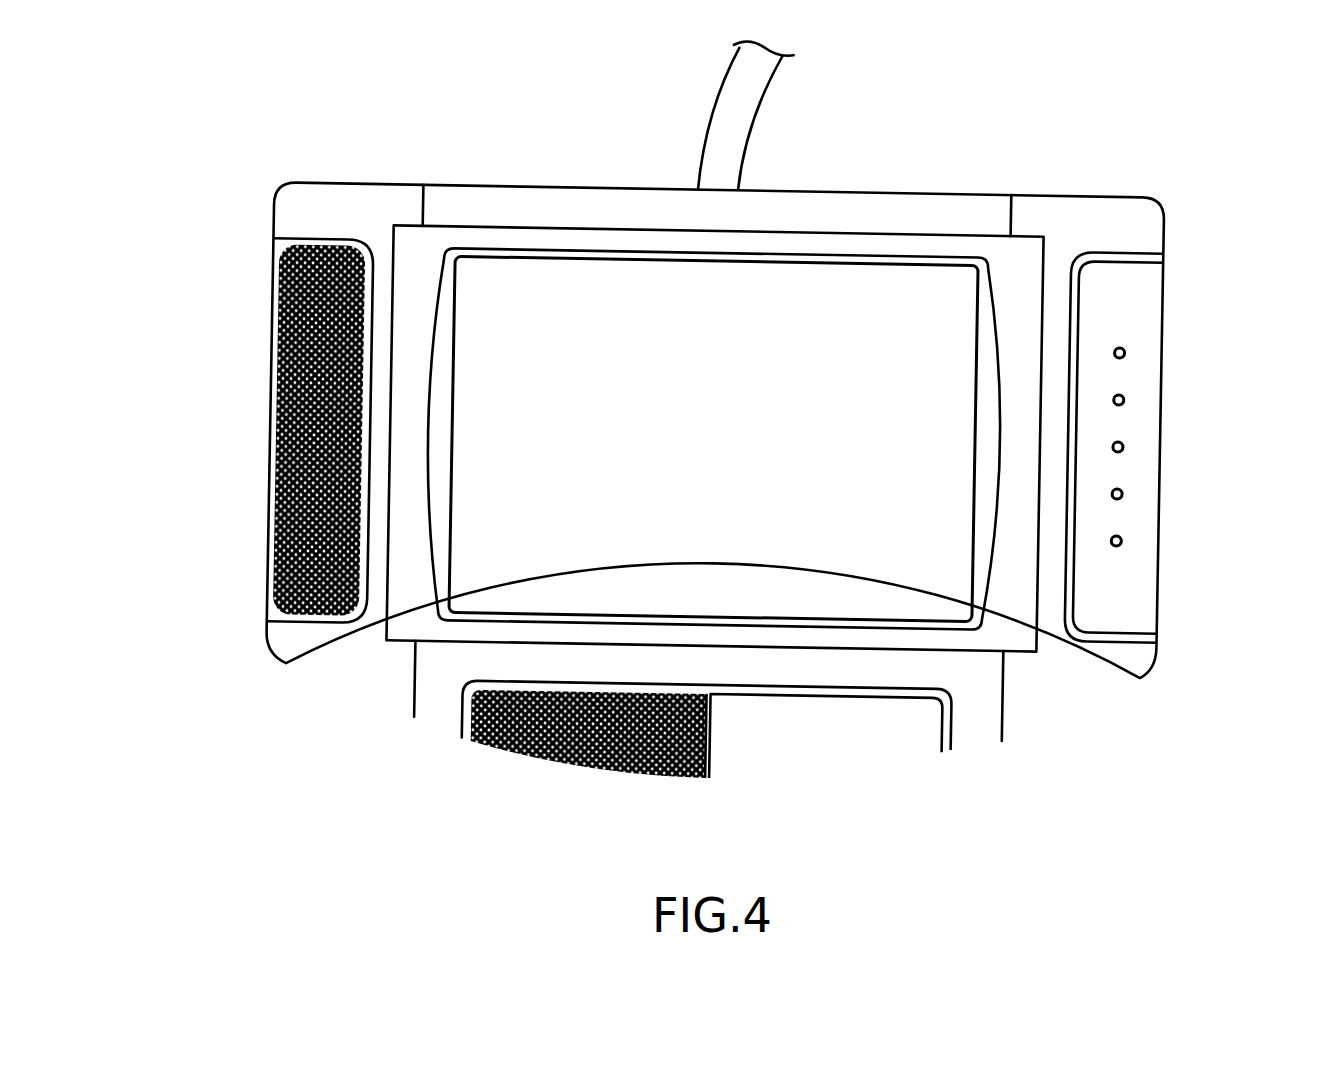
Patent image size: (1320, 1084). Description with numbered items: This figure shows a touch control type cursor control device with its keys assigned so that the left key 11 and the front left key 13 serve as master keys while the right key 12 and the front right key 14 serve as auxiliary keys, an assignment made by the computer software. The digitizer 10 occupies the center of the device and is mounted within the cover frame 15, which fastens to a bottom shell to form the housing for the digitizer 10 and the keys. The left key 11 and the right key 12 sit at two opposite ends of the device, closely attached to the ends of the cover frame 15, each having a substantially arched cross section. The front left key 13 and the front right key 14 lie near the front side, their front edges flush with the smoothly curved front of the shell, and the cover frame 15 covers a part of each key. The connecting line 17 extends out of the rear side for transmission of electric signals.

The digitizer 10 is at (604, 295).
The left key 11 is at (269, 290).
The right key 12 is at (1130, 308).
The front left key 13 is at (514, 757).
The front right key 14 is at (771, 741).
The cover frame 15 is at (411, 607).
The connecting line 17 is at (724, 118).